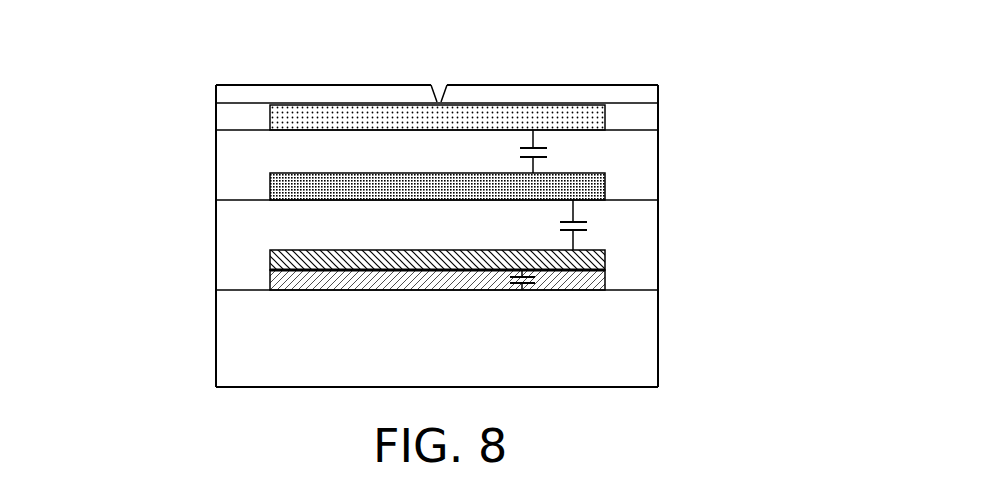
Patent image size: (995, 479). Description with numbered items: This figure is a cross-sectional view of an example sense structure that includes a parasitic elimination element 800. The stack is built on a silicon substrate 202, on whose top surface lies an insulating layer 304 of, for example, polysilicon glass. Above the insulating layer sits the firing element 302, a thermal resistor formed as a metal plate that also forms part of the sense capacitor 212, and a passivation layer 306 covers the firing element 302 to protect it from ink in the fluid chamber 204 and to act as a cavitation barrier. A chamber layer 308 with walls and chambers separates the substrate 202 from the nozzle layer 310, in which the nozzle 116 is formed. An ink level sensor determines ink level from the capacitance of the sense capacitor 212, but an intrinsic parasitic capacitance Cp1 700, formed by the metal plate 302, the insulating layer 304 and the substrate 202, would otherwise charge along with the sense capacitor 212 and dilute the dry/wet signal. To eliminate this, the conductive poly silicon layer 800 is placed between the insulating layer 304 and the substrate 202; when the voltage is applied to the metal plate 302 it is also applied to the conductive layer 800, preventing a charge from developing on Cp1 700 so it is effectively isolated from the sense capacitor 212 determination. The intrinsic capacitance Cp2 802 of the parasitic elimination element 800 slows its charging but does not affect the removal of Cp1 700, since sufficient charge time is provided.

The nozzle 116 is at (446, 64).
The nozzle layer 310 is at (578, 85).
The chamber layer 308 is at (658, 117).
The fluid chamber 204 is at (270, 123).
The passivation layer 306 is at (658, 177).
The firing element 302 is at (270, 183).
The sense capacitor 212 is at (504, 150).
The insulating layer 304 is at (658, 227).
The parasitic capacitance Cp1 700 is at (540, 231).
The parasitic elimination element 800 is at (605, 263).
The intrinsic capacitance Cp2 802 is at (556, 287).
The silicon substrate 202 is at (658, 353).